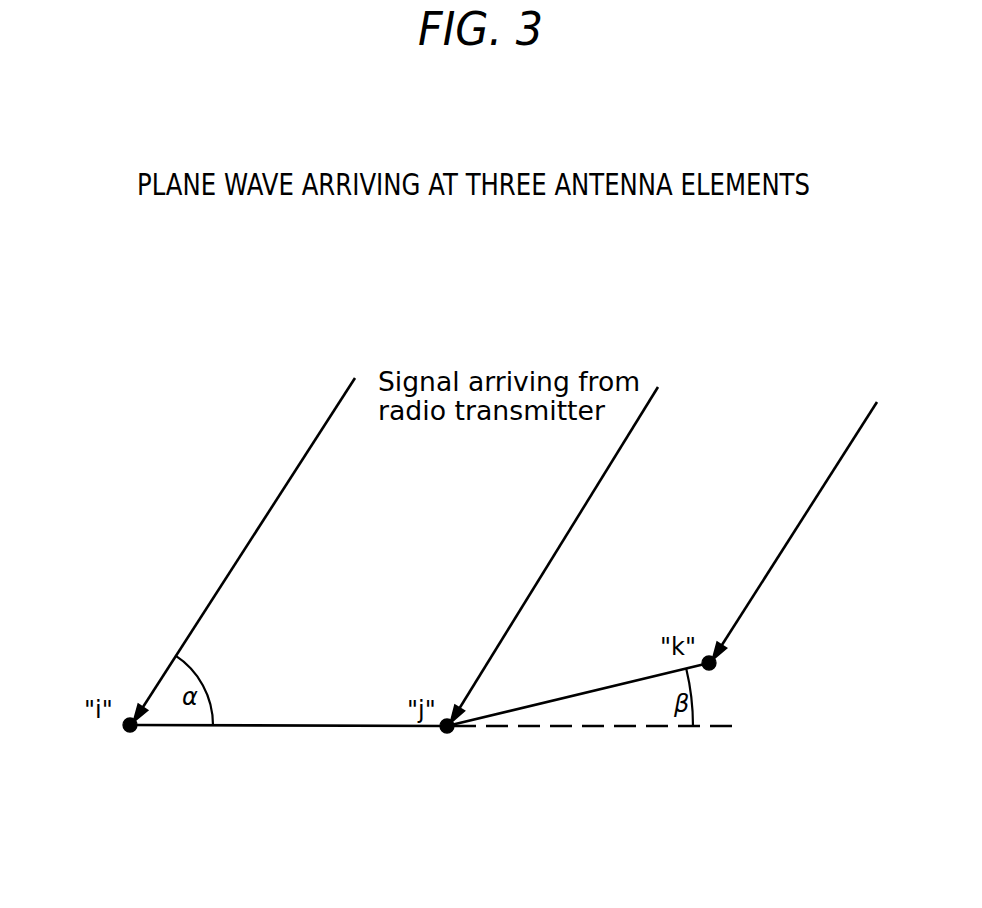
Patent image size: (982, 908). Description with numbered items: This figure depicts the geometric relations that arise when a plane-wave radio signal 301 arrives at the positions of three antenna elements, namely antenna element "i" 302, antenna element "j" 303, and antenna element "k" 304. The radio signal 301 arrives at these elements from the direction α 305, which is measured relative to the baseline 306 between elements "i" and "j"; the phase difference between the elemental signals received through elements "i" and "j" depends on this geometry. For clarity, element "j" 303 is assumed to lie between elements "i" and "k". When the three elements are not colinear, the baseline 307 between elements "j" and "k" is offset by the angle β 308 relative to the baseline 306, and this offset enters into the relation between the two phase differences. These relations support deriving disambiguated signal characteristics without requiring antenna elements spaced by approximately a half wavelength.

The radio signal 301 is at (537, 578).
The antenna element "i" 302 is at (132, 733).
The antenna element "j" 303 is at (448, 735).
The antenna element "k" 304 is at (717, 662).
The direction α 305 is at (206, 688).
The baseline between elements "i" and "j" 306 is at (282, 727).
The baseline between elements "j" and "k" 307 is at (512, 707).
The angle β 308 is at (693, 697).